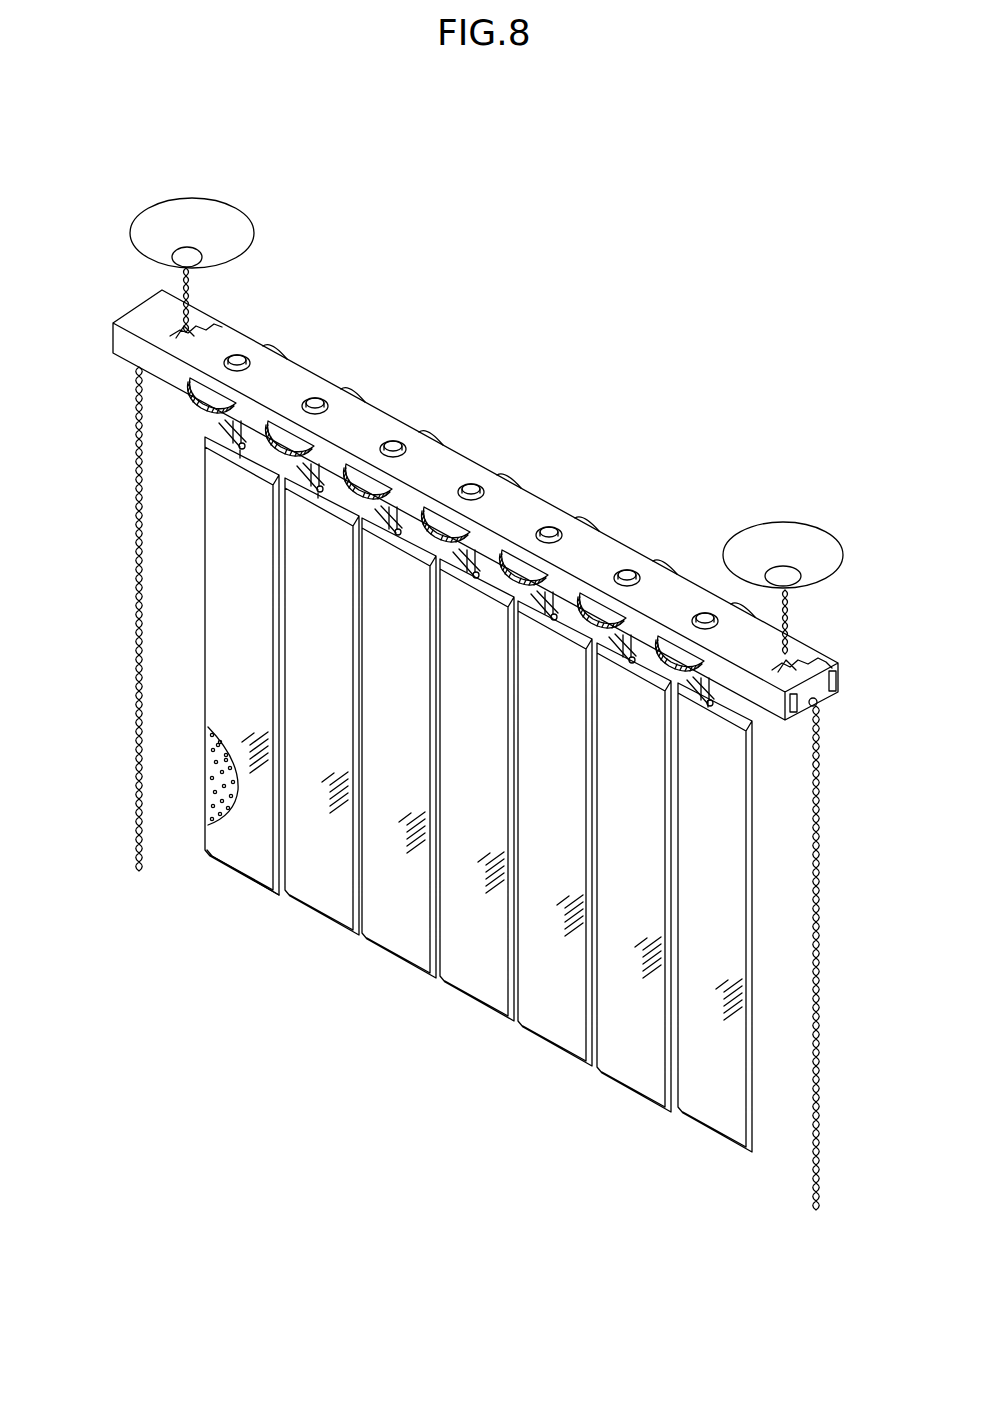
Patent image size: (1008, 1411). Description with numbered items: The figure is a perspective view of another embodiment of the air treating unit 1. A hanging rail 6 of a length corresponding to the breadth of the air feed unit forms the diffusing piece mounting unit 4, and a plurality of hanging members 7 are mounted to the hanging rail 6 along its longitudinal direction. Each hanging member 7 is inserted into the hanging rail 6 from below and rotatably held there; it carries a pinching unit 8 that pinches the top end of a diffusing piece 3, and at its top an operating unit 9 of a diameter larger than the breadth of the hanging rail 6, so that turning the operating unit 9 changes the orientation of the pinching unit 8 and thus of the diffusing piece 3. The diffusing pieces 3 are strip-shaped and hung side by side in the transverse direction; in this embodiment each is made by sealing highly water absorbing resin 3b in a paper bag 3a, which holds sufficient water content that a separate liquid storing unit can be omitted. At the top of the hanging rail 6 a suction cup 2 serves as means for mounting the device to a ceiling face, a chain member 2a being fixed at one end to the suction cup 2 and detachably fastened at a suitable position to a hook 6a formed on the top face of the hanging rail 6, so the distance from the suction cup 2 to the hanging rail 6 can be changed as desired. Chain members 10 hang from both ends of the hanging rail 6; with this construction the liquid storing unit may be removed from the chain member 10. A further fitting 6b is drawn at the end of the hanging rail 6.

The air treating unit 1 is at (633, 372).
The suction cup 2 is at (237, 231).
The chain member 2a is at (195, 297).
The diffusing piece 3 is at (466, 730).
The paper bag 3a is at (242, 843).
The highly water absorbing resin 3b is at (212, 814).
The diffusing piece mounting unit 4 is at (580, 497).
The hanging rail 6 is at (457, 472).
The hook 6a is at (180, 333).
The rail end fitting 6b is at (838, 685).
The hanging member 7 is at (313, 507).
The pinching unit 8 is at (213, 452).
The operating unit 9 is at (197, 398).
The chain member 10 is at (140, 718).